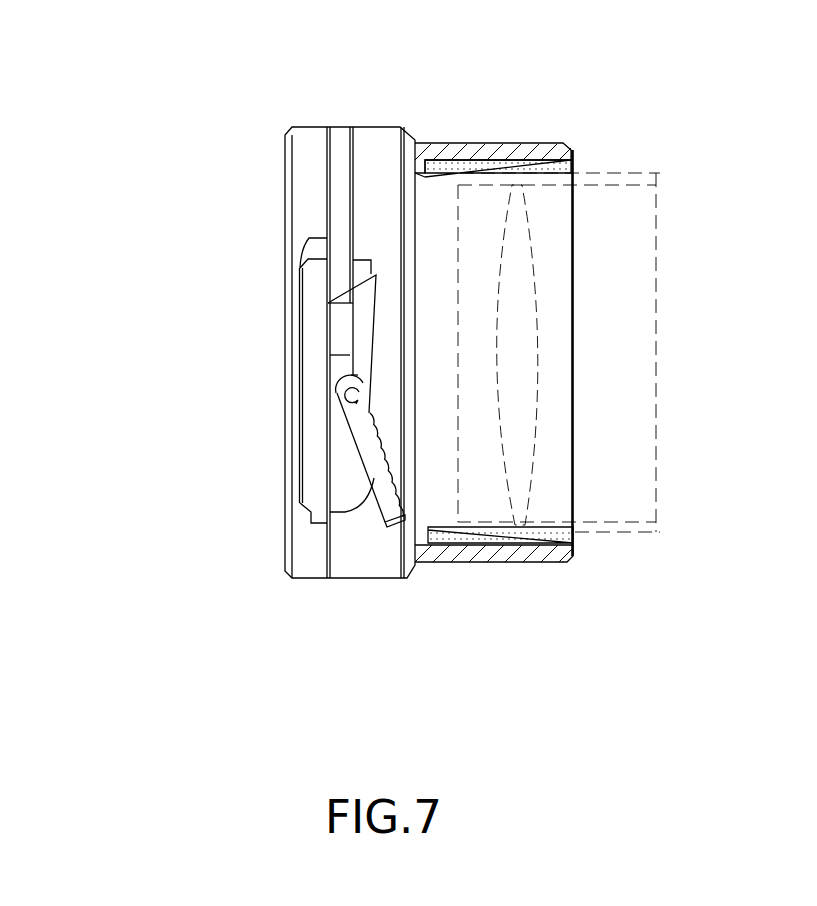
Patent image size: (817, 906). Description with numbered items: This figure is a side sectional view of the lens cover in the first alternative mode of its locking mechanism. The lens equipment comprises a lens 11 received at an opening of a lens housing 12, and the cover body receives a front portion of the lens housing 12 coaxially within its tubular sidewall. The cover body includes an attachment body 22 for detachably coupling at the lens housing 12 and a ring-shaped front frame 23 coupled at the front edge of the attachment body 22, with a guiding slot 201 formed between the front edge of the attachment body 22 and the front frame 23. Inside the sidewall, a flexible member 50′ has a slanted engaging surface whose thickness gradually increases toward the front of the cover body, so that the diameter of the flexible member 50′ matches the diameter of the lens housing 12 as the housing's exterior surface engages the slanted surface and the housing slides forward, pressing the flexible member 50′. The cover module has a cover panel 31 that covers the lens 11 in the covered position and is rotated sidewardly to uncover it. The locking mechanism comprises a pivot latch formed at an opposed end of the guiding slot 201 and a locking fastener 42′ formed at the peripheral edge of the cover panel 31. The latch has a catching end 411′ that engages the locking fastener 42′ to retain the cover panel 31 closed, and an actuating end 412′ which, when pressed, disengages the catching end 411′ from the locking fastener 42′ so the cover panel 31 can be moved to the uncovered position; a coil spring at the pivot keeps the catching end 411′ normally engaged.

The guiding slot 201 is at (331, 116).
The cover panel 31 is at (340, 172).
The lens 11 is at (517, 227).
The lens housing 12 is at (642, 178).
The front frame 23 is at (307, 183).
The catching end 411′ is at (346, 296).
The locking fastener 42′ is at (334, 326).
The actuating end 412′ is at (385, 502).
The flexible member 50′ is at (513, 538).
The attachment body 22 is at (482, 557).